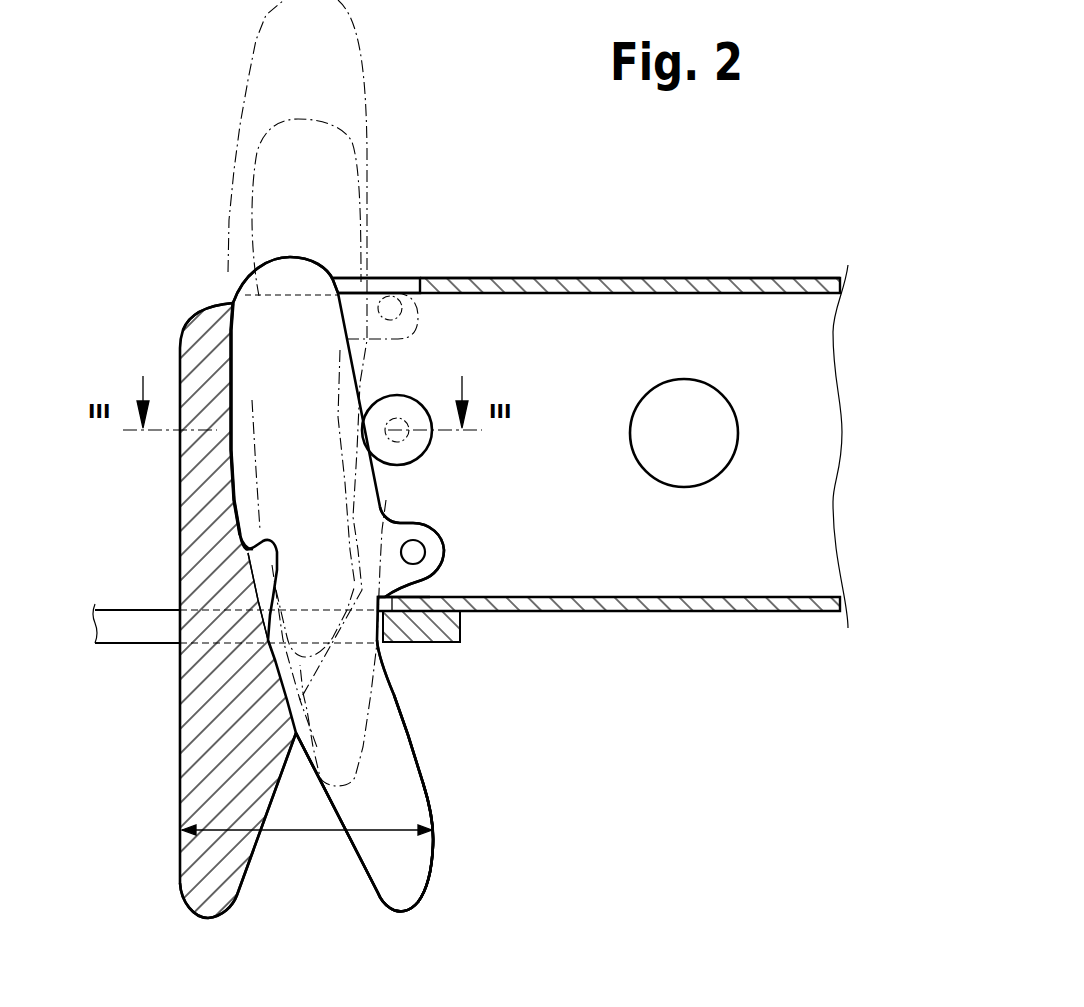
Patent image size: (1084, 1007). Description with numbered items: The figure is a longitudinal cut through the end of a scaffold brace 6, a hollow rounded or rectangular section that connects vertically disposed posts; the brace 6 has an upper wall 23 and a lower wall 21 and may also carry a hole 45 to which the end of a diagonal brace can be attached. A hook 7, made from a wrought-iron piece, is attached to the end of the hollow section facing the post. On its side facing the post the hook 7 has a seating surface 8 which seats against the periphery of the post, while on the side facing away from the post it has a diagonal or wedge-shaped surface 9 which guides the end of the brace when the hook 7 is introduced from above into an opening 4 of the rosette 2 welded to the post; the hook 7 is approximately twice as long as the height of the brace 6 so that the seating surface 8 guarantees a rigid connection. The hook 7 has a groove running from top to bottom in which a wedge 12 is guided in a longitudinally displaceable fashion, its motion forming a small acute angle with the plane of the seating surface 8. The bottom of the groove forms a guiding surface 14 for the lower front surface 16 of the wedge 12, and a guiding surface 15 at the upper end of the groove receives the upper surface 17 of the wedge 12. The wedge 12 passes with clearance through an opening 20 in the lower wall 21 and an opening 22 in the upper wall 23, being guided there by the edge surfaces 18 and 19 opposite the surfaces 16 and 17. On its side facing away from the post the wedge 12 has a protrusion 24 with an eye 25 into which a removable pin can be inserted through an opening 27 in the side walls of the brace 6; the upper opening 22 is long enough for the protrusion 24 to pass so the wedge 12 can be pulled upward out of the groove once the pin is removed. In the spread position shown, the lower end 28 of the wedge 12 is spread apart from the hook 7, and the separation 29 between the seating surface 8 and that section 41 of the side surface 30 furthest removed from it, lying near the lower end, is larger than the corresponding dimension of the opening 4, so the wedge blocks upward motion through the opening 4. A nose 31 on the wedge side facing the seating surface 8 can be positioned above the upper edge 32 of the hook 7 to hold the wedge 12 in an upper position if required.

The rosette 2 is at (428, 626).
The opening 4 is at (388, 643).
The brace 6 is at (733, 270).
The hook 7 is at (207, 857).
The seating surface 8 is at (178, 688).
The diagonal or wedge-shaped surface 9 is at (250, 871).
The wedge 12 is at (402, 818).
The guiding surface 14 is at (300, 708).
The guiding surface 15 is at (236, 362).
The lower front surface 16 is at (308, 768).
The upper surface 17 is at (222, 340).
The edge surface 18 is at (348, 372).
The edge surface 19 is at (423, 767).
The opening 20 is at (388, 596).
The lower wall 21 is at (628, 604).
The opening 22 is at (350, 286).
The upper wall 23 is at (520, 286).
The protrusion 24 is at (418, 519).
The eye 25 is at (413, 552).
The opening 27 is at (408, 395).
The lower end 28 is at (412, 888).
The separation 29 is at (307, 818).
The side surface 30 is at (438, 862).
The nose 31 is at (256, 551).
The upper edge 32 is at (191, 306).
The section 41 is at (438, 838).
The hole 45 is at (688, 478).